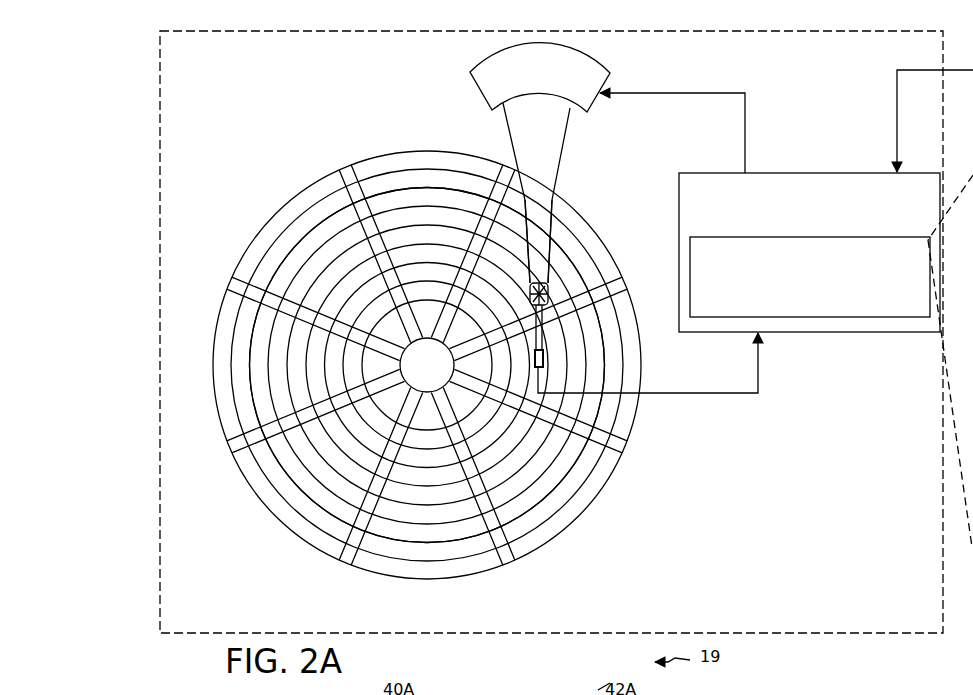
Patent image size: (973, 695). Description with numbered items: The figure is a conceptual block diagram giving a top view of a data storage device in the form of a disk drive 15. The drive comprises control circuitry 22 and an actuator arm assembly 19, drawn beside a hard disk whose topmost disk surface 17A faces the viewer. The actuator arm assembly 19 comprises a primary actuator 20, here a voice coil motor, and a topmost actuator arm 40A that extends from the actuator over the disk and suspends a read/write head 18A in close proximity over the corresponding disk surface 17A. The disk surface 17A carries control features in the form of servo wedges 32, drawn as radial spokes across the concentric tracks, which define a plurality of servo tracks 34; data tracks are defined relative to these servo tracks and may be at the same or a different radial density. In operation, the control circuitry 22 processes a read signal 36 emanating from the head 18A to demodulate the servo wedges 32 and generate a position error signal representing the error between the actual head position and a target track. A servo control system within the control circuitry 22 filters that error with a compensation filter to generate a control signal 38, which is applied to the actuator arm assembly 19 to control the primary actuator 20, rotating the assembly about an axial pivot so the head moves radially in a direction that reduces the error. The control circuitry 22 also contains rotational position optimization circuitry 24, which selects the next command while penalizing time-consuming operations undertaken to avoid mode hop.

The disk drive 15 is at (876, 640).
The disk surface 17A is at (277, 196).
The servo tracks 34 is at (432, 160).
The servo wedges 32 is at (521, 590).
The primary actuator 20 is at (600, 101).
The actuator arm assembly 19 is at (583, 132).
The actuator arm 40A is at (560, 179).
The read/write head 18A is at (551, 368).
The control circuitry 22 is at (809, 252).
The rotational position optimization circuitry 24 is at (810, 277).
The control signal 38 is at (746, 118).
The read signal 36 is at (654, 409).